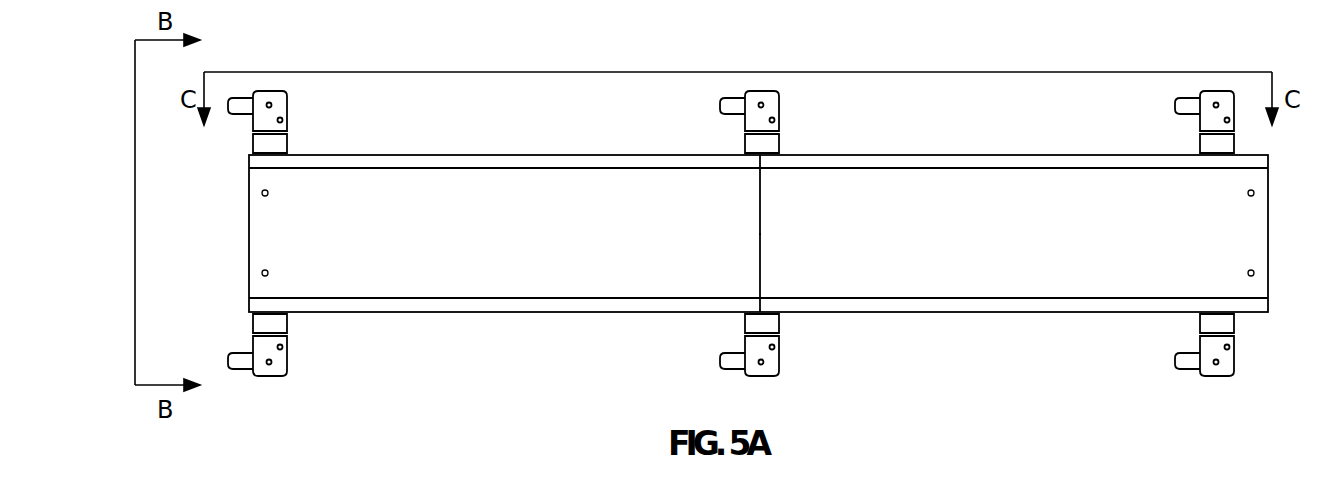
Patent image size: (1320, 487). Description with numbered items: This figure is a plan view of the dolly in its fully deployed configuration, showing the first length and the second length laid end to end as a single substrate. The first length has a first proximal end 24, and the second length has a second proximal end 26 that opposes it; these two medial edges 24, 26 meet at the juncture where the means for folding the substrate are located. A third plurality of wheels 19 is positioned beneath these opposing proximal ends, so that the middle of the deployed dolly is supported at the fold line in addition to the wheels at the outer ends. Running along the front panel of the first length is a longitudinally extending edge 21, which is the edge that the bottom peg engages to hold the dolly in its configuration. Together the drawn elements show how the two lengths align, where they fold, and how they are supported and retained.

The third plurality of wheels 19 is at (779, 113).
The longitudinally extending edge 21 is at (960, 155).
The first proximal end 24 is at (760, 278).
The second proximal end 26 is at (762, 186).